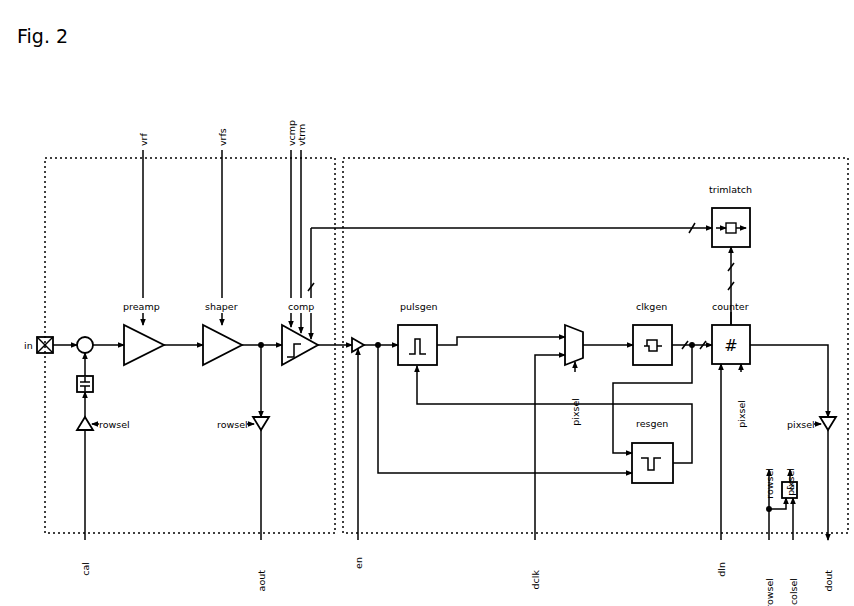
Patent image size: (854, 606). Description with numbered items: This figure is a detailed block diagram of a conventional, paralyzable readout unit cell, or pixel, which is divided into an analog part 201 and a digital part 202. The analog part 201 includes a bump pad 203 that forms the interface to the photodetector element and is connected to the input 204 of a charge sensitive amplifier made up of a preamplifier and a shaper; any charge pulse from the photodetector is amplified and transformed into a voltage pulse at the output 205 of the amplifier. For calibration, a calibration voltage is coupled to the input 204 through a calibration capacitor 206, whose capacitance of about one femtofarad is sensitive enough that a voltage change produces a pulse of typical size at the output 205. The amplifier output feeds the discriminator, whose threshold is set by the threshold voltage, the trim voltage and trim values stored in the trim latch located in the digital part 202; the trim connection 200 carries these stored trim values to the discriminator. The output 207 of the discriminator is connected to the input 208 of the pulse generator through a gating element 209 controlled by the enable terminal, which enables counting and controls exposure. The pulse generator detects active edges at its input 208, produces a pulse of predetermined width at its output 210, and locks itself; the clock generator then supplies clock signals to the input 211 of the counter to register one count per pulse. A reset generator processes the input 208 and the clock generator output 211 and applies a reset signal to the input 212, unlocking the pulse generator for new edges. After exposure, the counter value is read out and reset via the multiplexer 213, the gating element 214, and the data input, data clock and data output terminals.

The trim data bus to trimlatch 200 is at (511, 223).
The analog part 201 is at (190, 345).
The digital part 202 is at (595, 345).
The bump pad 203 is at (55, 336).
The input of the charge sensitive amplifier 204 is at (94, 344).
The output of the amplifier 205 is at (262, 336).
The calibration capacitor 206 is at (99, 384).
The output of the discriminator 207 is at (332, 335).
The input of the pulse generator 208 is at (498, 399).
The gating element 209 is at (358, 336).
The output of the pulse generator 210 is at (501, 331).
The input of the counter 211 is at (662, 390).
The reset input of the pulse generator 212 is at (554, 414).
The multiplexer 213 is at (576, 337).
The gating element 214 is at (819, 415).